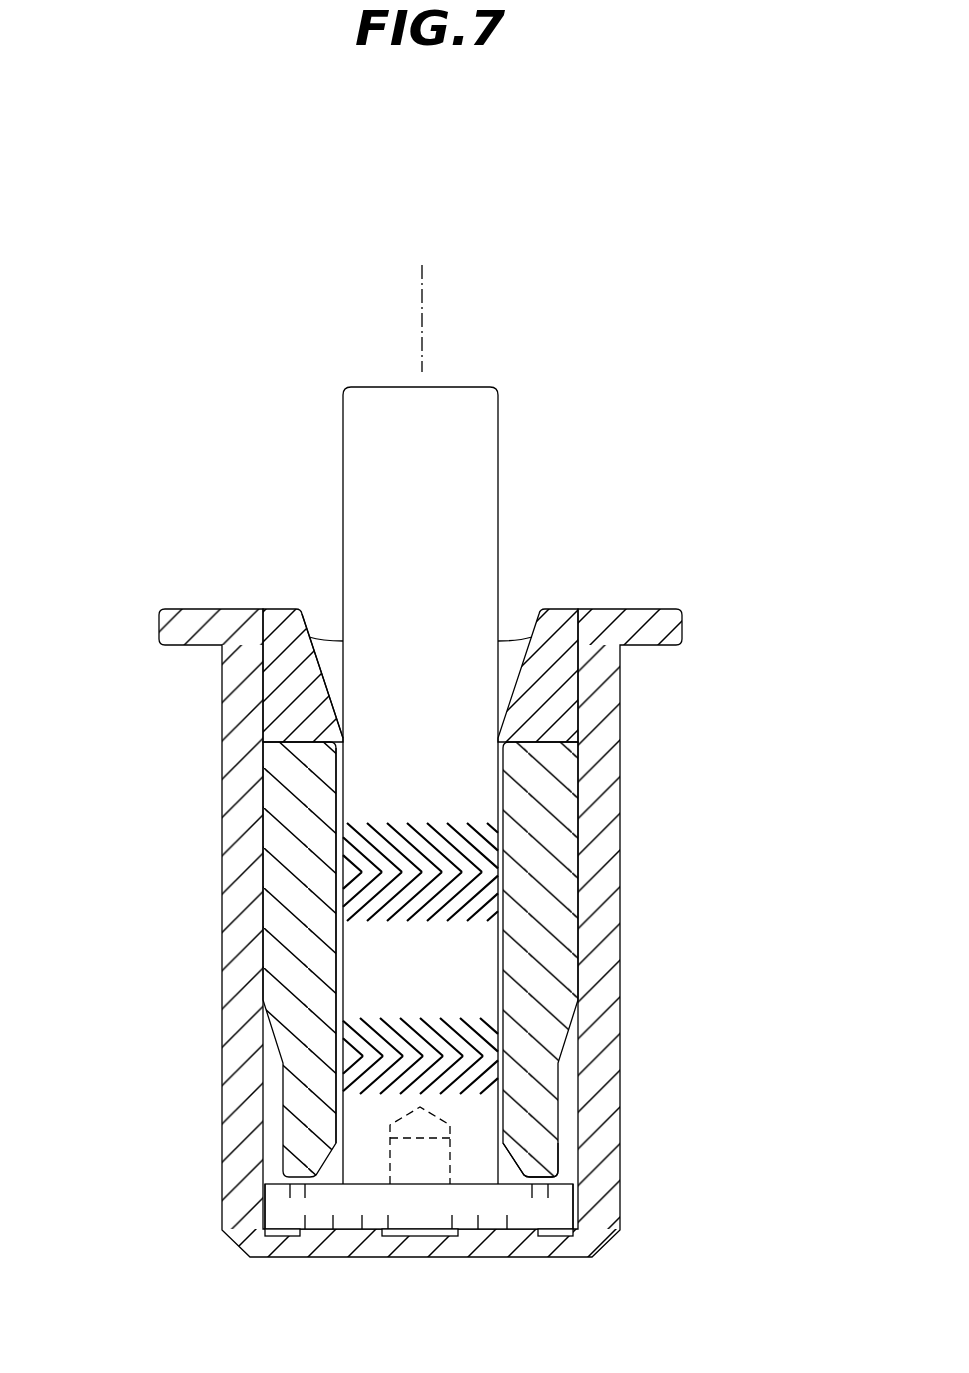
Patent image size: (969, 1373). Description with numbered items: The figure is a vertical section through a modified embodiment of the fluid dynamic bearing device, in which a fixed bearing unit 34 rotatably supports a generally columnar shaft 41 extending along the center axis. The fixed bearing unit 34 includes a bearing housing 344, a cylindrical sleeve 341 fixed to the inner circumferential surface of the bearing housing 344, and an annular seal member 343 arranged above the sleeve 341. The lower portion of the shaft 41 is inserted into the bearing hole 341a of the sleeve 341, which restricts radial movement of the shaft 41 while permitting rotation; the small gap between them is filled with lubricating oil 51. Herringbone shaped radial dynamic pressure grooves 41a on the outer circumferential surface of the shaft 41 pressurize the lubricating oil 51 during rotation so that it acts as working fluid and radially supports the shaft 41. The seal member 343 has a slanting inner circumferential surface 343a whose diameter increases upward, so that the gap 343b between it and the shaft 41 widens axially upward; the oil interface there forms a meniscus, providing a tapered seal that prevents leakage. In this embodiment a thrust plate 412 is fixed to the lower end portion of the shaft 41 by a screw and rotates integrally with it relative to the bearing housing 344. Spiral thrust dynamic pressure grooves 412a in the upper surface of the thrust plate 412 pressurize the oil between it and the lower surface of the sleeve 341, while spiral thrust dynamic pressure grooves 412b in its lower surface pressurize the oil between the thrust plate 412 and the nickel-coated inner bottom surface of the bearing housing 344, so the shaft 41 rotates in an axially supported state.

The fixed bearing unit 34 is at (207, 1065).
The shaft 41 is at (483, 468).
The radial dynamic pressure grooves 41a is at (465, 930).
The lubricating oil 51 is at (563, 1160).
The sleeve 341 is at (560, 812).
The bearing hole 341a is at (341, 790).
The seal member 343 is at (553, 612).
The inner circumferential surface 343a is at (329, 672).
The gap 343b is at (330, 612).
The bearing housing 344 is at (600, 1013).
The thrust plate 412 is at (352, 1212).
The spiral thrust dynamic pressure grooves 412a is at (288, 1200).
The spiral thrust dynamic pressure grooves 412b is at (534, 1217).